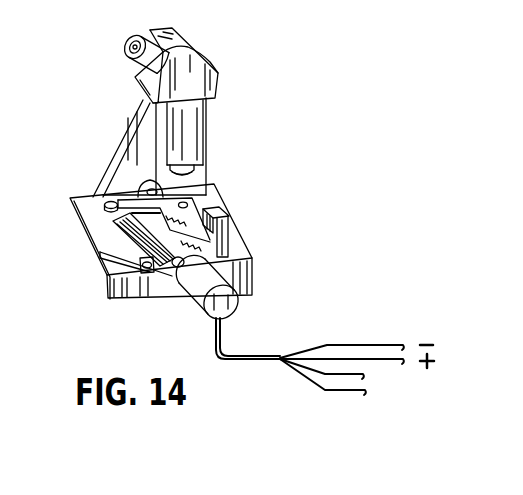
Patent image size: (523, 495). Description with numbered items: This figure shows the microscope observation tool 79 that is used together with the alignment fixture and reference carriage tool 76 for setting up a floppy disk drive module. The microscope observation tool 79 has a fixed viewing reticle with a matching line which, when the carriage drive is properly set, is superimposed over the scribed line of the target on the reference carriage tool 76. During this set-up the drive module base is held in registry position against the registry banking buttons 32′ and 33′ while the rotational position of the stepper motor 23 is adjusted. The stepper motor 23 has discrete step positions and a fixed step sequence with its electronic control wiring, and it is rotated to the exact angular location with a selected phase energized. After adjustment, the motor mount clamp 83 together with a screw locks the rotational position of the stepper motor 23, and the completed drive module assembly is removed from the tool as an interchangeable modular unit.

The microscope observation tool 79 is at (207, 184).
The reference carriage tool 76 is at (190, 210).
The registry banking button 32′ is at (108, 204).
The registry banking button 33′ is at (99, 262).
The motor mount clamp 83 is at (161, 273).
The stepper motor 23 is at (239, 308).